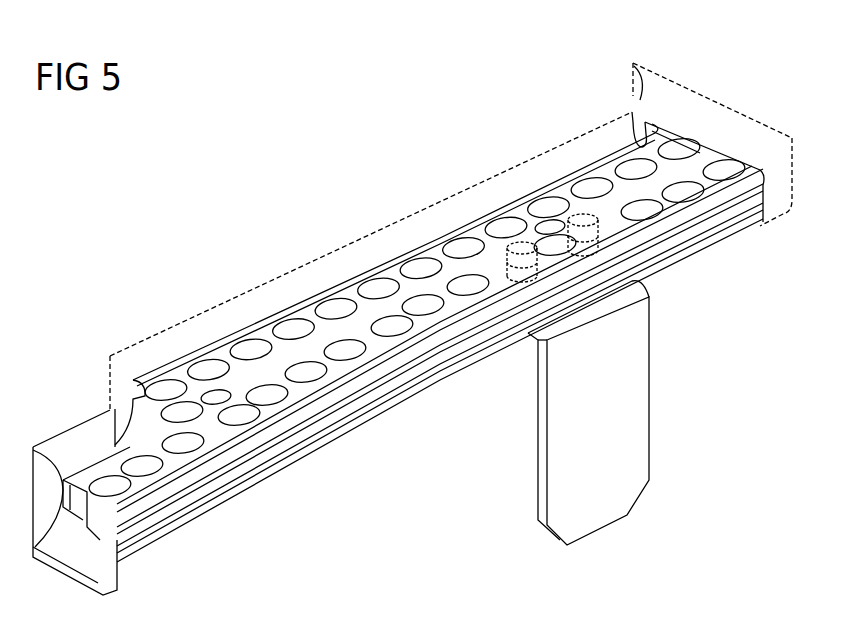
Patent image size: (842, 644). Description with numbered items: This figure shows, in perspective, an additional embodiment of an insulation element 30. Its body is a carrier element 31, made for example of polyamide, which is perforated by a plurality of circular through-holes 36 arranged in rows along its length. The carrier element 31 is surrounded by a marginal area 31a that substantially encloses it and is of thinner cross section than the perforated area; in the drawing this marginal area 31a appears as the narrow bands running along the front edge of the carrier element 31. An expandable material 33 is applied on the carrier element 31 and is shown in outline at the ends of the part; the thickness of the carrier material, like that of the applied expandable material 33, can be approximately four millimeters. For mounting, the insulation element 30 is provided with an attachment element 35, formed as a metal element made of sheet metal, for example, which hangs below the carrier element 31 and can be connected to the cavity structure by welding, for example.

The insulation element 30 is at (146, 269).
The carrier element 31 is at (696, 223).
The marginal area 31a is at (262, 460).
The expandable material 33 is at (730, 130).
The attachment element 35 is at (640, 402).
The through-holes 36 is at (250, 347).